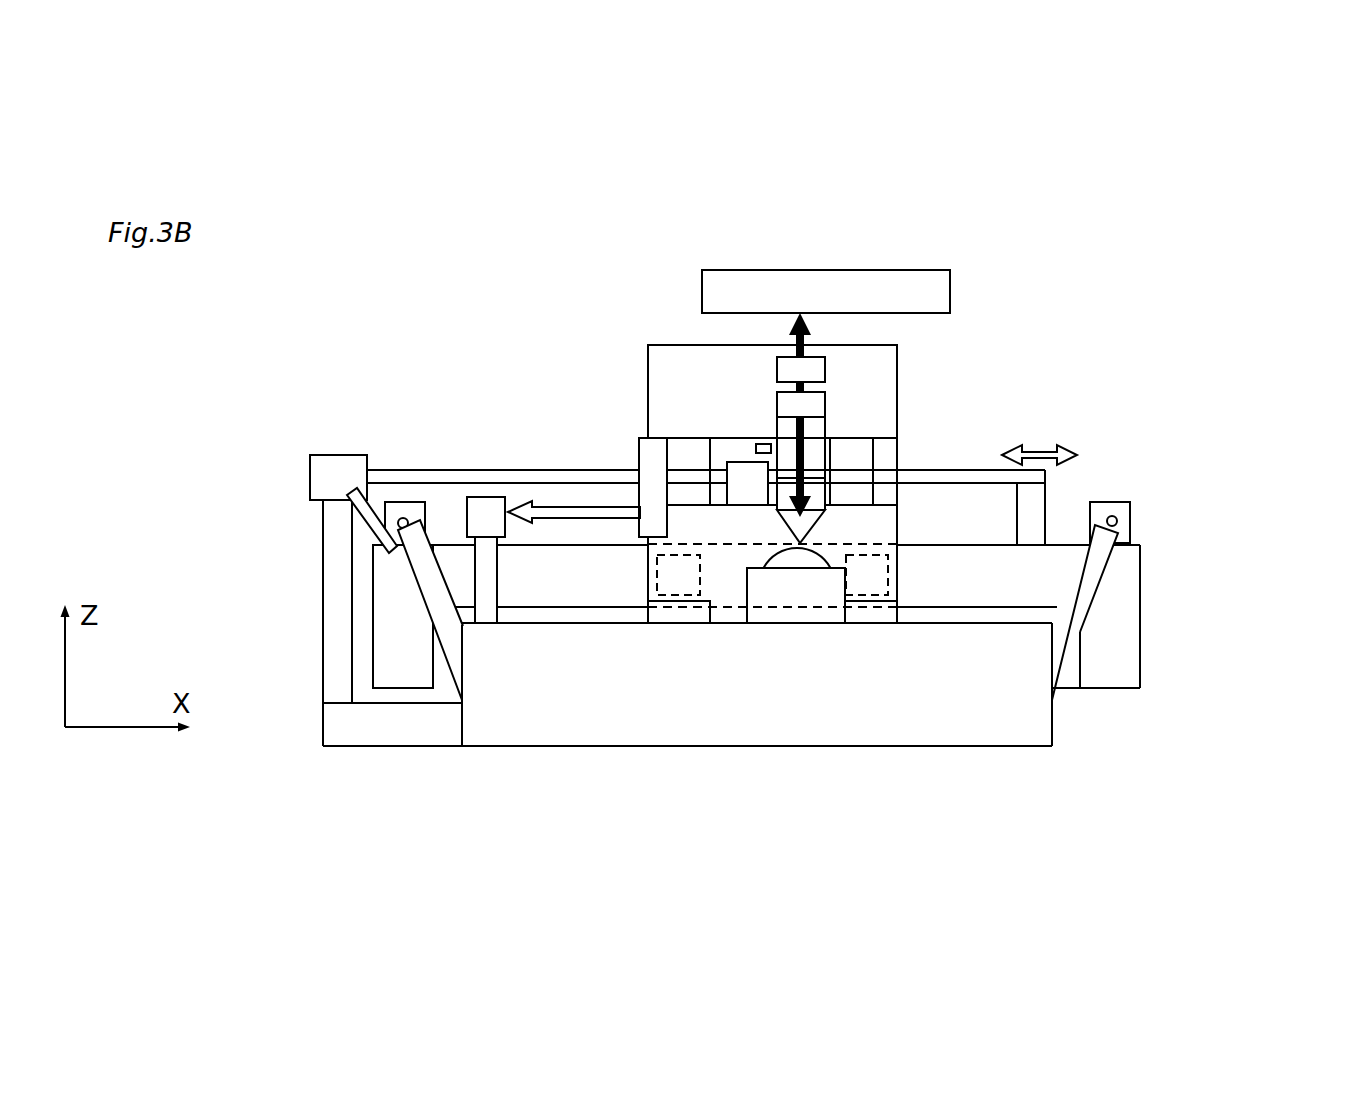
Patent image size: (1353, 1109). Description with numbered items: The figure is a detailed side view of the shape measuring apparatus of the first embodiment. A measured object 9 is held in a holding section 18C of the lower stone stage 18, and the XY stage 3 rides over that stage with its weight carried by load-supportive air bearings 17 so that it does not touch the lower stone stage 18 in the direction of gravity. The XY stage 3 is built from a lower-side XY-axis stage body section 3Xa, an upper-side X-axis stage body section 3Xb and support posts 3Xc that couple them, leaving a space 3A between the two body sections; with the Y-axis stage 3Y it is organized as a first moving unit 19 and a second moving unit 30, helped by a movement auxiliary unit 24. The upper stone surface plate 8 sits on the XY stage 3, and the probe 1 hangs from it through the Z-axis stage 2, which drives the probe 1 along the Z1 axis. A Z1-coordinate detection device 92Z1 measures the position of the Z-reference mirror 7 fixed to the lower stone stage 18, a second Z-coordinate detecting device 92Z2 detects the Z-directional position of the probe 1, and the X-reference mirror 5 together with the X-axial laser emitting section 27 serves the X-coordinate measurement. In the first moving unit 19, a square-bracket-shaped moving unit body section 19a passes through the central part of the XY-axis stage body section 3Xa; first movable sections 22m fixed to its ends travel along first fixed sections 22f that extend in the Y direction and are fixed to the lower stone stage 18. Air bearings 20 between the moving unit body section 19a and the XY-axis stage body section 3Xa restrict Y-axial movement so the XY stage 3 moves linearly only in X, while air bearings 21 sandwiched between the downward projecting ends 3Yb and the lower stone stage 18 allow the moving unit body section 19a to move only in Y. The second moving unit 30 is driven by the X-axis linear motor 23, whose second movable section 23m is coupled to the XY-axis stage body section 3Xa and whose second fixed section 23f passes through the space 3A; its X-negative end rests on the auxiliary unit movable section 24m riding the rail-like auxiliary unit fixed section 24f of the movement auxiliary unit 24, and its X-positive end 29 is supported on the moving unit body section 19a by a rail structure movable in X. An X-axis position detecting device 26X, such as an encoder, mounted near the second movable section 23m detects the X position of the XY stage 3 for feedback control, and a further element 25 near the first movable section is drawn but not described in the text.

The probe 1 is at (812, 488).
The Z-axis stage 2 is at (811, 405).
The XY stage 3 is at (1063, 258).
The space 3A is at (717, 445).
The XY-axis stage body section 3Xa is at (877, 522).
The X-axis stage body section 3Xb is at (887, 370).
The support post 3Xc is at (690, 460).
The Y-axis stage 3Y is at (948, 596).
The projecting end 3Yb is at (393, 662).
The X-reference mirror 5 is at (485, 513).
The Z-reference mirror 7 is at (712, 283).
The upper stone surface plate 8 is at (648, 400).
The measured object 9 is at (800, 562).
The load-supportive air bearing 17 is at (678, 613).
The lower stone stage 18 is at (847, 720).
The holding section 18C is at (780, 610).
The first moving unit 19 is at (1045, 587).
The moving unit body section 19a is at (1058, 558).
The air bearing 20 is at (873, 613).
The air bearing 21 is at (447, 680).
The first fixed section 22f is at (383, 527).
The first movable section 22m is at (410, 506).
The X-axis linear motor 23 is at (437, 474).
The second fixed section 23f is at (965, 478).
The second movable section 23m is at (745, 468).
The movement auxiliary unit 24 is at (332, 448).
The auxiliary unit fixed section 24f is at (335, 605).
The auxiliary unit movable section 24m is at (340, 478).
The pivot block 25 is at (405, 498).
The X-axis position detecting device 26X is at (763, 443).
The X-axial laser emitting section 27 is at (660, 577).
The X-positive side end of second fixed section 29 is at (1110, 515).
The second moving unit 30 is at (520, 388).
The Z1 axis Z1 is at (796, 310).
The Z1-coordinate detection device 92Z1 is at (819, 338).
The Z2-coordinate detecting device 92Z2 is at (836, 398).